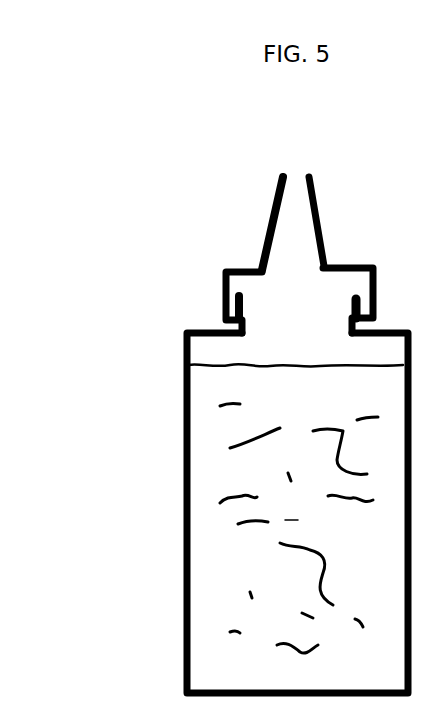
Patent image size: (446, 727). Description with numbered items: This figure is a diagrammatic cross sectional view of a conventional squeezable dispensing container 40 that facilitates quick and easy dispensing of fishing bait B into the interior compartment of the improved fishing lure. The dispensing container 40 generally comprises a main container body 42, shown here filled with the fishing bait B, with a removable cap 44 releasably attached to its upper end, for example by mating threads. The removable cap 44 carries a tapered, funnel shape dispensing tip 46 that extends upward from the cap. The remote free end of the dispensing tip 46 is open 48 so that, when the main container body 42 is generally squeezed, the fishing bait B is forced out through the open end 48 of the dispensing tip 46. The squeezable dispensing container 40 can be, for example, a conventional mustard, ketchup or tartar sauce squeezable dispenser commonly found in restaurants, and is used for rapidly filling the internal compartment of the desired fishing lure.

The squeezable dispensing container 40 is at (128, 494).
The main container body 42 is at (185, 594).
The removable cap 44 is at (260, 253).
The dispensing tip 46 is at (318, 203).
The open end of dispensing tip 48 is at (298, 162).